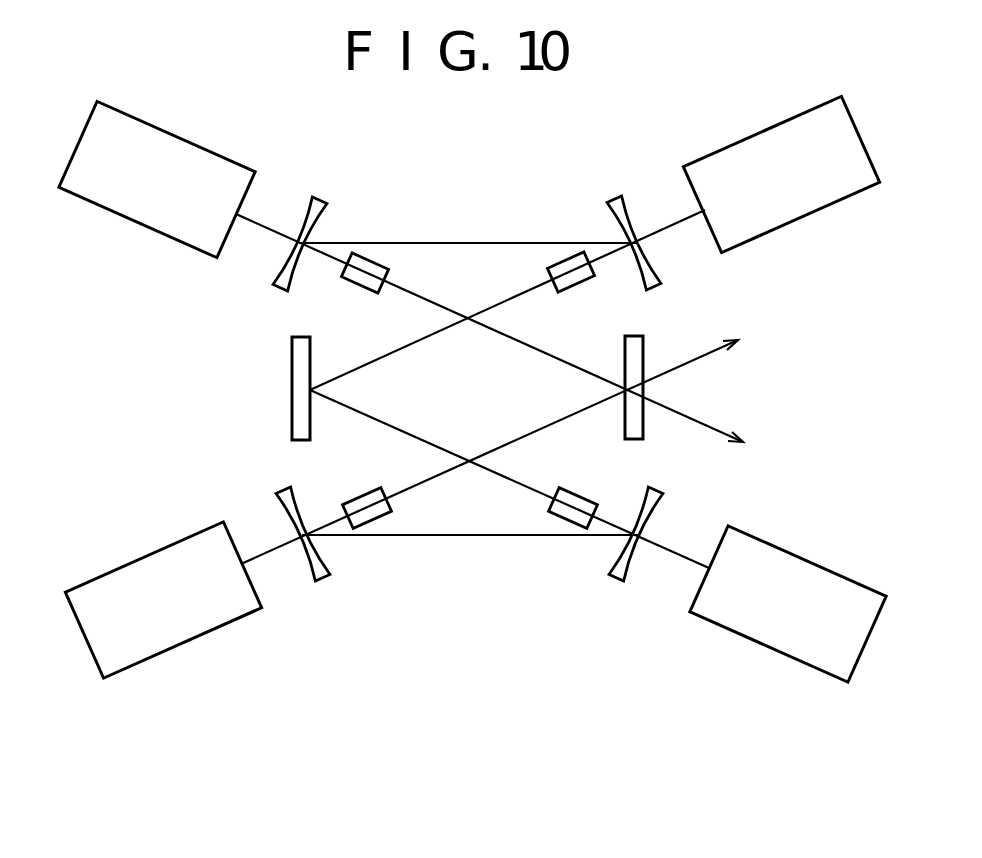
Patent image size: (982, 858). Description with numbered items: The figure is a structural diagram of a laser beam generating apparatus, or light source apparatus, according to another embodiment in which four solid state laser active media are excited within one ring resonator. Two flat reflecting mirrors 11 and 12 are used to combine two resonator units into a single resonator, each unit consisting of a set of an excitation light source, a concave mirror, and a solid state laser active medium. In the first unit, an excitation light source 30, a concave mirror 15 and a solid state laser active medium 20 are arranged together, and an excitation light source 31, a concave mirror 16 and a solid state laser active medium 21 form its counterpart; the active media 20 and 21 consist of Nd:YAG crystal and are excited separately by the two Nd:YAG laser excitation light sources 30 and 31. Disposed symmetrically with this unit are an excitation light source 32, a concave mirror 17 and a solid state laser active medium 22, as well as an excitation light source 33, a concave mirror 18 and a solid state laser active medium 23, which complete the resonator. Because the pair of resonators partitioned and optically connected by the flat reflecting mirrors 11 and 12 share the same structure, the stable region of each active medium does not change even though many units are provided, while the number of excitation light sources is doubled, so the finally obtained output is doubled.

The flat reflection mirror 11 is at (292, 428).
The flat reflection mirror 12 is at (643, 430).
The concave mirror 15 is at (317, 580).
The concave mirror 16 is at (623, 578).
The concave mirror 17 is at (615, 200).
The concave mirror 18 is at (313, 198).
The solid state laser active medium 20 is at (360, 492).
The solid state laser active medium 21 is at (577, 487).
The solid state laser active medium 22 is at (573, 290).
The solid state laser active medium 23 is at (358, 288).
The excitation light source 30 is at (108, 570).
The excitation light source 31 is at (818, 565).
The excitation light source 32 is at (735, 145).
The excitation light source 33 is at (208, 147).